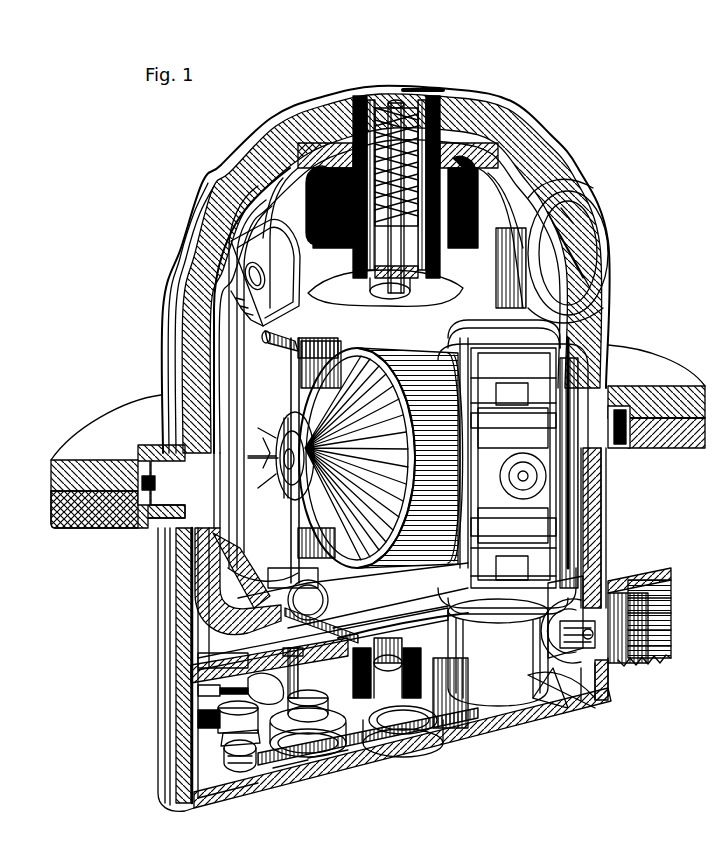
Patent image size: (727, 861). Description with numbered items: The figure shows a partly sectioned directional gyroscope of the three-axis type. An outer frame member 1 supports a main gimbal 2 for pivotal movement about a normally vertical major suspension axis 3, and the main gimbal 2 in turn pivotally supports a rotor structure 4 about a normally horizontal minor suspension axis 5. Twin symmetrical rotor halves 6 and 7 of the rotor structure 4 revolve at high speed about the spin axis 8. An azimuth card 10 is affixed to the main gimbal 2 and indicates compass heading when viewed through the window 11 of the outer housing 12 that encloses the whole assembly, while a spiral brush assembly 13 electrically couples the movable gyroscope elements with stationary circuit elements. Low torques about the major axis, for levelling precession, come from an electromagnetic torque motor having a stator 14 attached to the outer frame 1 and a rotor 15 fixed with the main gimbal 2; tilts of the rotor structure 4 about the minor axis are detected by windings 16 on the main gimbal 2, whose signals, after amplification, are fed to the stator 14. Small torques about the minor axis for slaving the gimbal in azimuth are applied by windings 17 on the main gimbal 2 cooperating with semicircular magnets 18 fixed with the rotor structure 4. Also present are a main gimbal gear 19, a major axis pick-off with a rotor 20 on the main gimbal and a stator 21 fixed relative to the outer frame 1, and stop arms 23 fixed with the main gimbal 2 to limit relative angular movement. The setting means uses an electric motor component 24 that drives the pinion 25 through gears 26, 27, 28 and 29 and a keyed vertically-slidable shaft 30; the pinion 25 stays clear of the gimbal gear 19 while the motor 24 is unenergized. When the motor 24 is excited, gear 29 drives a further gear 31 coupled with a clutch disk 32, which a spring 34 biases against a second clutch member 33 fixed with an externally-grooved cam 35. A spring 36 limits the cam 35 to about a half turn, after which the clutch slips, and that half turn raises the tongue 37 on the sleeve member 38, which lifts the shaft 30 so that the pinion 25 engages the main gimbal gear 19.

The outer frame member 1 is at (213, 165).
The main gimbal 2 is at (505, 357).
The major suspension axis 3 is at (388, 82).
The rotor structure 4 is at (277, 533).
The minor suspension axis 5 is at (276, 418).
The rotor half 6 is at (356, 545).
The rotor half 7 is at (428, 566).
The spin axis 8 is at (276, 448).
The azimuth card 10 is at (262, 297).
The window 11 is at (578, 255).
The outer housing 12 is at (585, 312).
The spiral brush assembly 13 is at (420, 75).
The stator 14 is at (330, 195).
The rotor 15 is at (462, 235).
The windings 16 is at (500, 640).
The windings 17 is at (515, 396).
The semicircular magnets 18 is at (530, 419).
The main gimbal gear 19 is at (317, 605).
The rotor 20 is at (362, 758).
The stator 21 is at (340, 768).
The stop arms 23 is at (282, 478).
The electric motor component 24 is at (497, 659).
The pinion 25 is at (190, 650).
The gear 26 is at (497, 690).
The gear 27 is at (455, 715).
The gear 28 is at (412, 735).
The gear 29 is at (308, 723).
The keyed vertically-slidable shaft 30 is at (290, 672).
The further gear 31 is at (232, 755).
The clutch disk 32 is at (219, 724).
The second clutch member 33 is at (190, 712).
The spring 34 is at (235, 738).
The externally-grooved cam 35 is at (261, 688).
The spring 36 is at (190, 683).
The tongue 37 is at (273, 760).
The sleeve member 38 is at (309, 768).